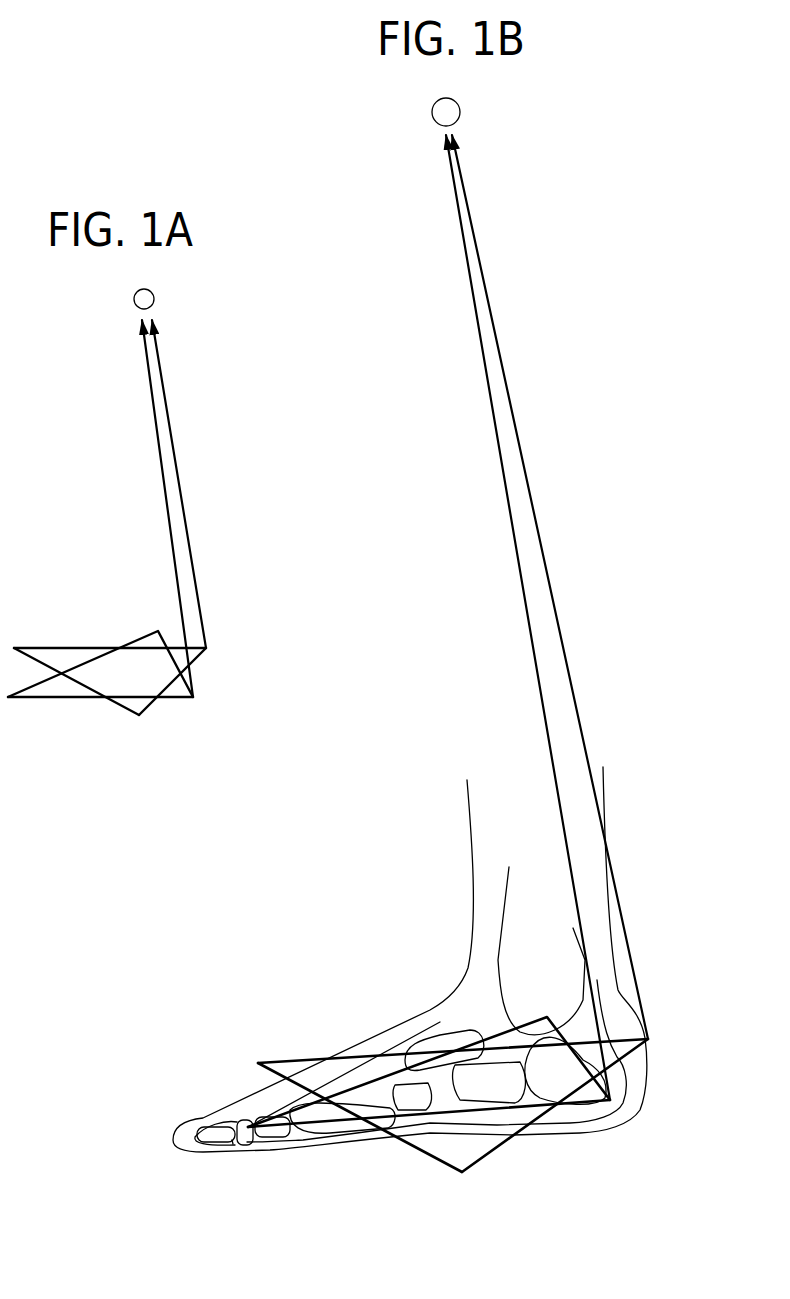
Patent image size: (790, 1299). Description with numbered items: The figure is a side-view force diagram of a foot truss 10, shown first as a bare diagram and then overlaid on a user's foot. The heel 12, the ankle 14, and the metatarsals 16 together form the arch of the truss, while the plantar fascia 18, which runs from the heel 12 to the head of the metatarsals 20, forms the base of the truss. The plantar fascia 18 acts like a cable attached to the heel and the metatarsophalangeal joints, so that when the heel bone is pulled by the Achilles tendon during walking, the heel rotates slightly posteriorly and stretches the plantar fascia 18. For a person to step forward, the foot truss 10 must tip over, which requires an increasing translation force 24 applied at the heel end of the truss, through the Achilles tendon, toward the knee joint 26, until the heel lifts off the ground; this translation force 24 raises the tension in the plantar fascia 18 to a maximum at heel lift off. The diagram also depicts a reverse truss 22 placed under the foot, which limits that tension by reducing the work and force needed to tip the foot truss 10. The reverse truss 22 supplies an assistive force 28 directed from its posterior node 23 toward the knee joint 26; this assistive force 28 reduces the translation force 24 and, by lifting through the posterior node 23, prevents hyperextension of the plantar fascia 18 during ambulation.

In FIG. 1A, the foot truss 10 is at (63, 697).
In FIG. 1B, the foot truss 10 is at (500, 1108).
In FIG. 1B, the heel 12 is at (623, 1113).
In FIG. 1B, the ankle 14 is at (588, 988).
In FIG. 1B, the metatarsals 16 is at (337, 1088).
In FIG. 1B, the plantar fascia 18 is at (357, 1133).
In FIG. 1B, the head of the metatarsals 20 is at (231, 1142).
In FIG. 1A, the reverse truss 22 is at (68, 648).
In FIG. 1B, the reverse truss 22 is at (282, 1060).
In FIG. 1A, the posterior node 23 is at (206, 648).
In FIG. 1B, the posterior node 23 is at (648, 1039).
In FIG. 1A, the translation force 24 is at (164, 487).
In FIG. 1B, the translation force 24 is at (496, 432).
In FIG. 1A, the knee joint 26 is at (155, 299).
In FIG. 1B, the knee joint 26 is at (436, 112).
In FIG. 1A, the assistive force 28 is at (183, 510).
In FIG. 1B, the assistive force 28 is at (522, 458).